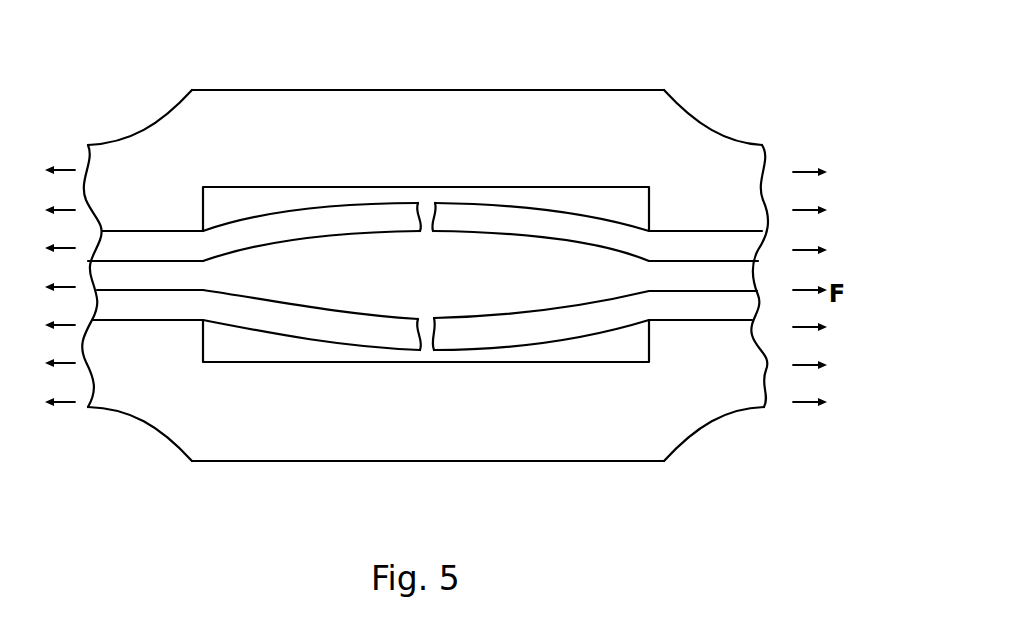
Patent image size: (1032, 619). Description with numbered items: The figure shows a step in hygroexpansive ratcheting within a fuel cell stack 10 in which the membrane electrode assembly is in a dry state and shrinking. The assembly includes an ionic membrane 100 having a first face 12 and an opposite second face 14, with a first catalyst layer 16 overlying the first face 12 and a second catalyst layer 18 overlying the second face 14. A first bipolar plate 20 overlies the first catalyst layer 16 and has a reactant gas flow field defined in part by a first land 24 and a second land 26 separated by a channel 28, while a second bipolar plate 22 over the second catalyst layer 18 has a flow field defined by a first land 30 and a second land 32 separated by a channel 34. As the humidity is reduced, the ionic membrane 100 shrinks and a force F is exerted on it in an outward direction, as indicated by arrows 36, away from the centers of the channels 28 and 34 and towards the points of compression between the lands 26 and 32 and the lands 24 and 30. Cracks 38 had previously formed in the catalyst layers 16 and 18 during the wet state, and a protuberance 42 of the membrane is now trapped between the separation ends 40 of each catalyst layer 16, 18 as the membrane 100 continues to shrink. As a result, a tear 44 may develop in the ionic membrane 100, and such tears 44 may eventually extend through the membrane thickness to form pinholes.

The fuel cell stack 10 is at (775, 67).
The first face 12 is at (747, 254).
The second face 14 is at (750, 309).
The first catalyst layer 16 is at (750, 236).
The second catalyst layer 18 is at (737, 315).
The first bipolar plate 20 is at (772, 148).
The second bipolar plate 22 is at (772, 406).
The first land 24 is at (703, 231).
The second land 26 is at (160, 231).
The channel 28 is at (265, 190).
The first land 30 is at (703, 322).
The second land 32 is at (157, 322).
The channel 34 is at (277, 360).
The arrows 36 is at (70, 170).
The cracks 38 is at (429, 213).
The separation ends 40 is at (421, 232).
The protuberance 42 is at (434, 225).
The tear 44 is at (421, 237).
The ionic membrane 100 is at (748, 278).